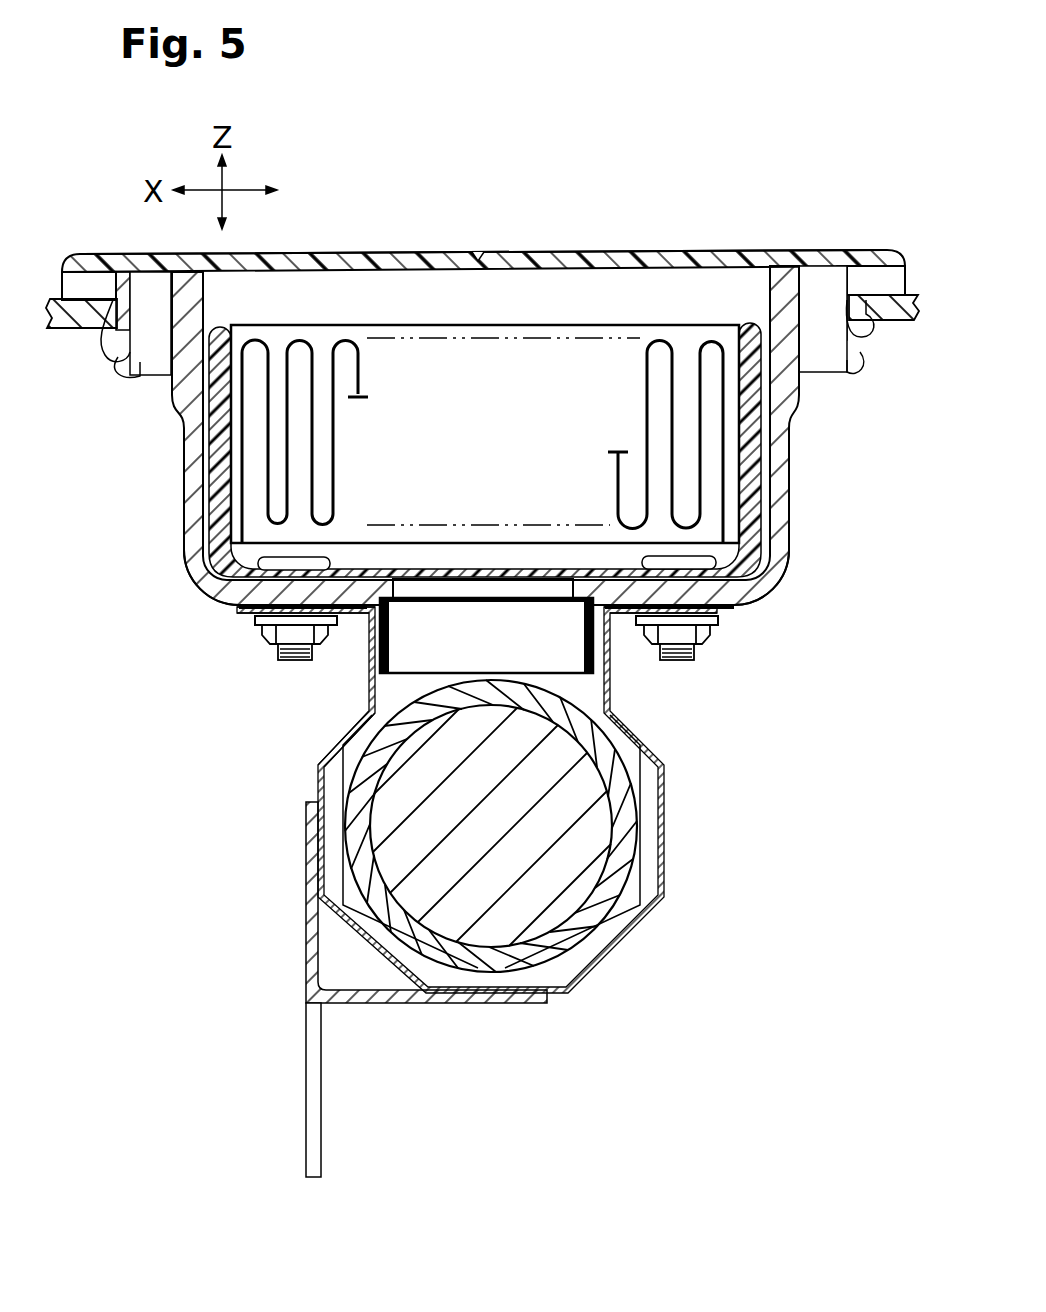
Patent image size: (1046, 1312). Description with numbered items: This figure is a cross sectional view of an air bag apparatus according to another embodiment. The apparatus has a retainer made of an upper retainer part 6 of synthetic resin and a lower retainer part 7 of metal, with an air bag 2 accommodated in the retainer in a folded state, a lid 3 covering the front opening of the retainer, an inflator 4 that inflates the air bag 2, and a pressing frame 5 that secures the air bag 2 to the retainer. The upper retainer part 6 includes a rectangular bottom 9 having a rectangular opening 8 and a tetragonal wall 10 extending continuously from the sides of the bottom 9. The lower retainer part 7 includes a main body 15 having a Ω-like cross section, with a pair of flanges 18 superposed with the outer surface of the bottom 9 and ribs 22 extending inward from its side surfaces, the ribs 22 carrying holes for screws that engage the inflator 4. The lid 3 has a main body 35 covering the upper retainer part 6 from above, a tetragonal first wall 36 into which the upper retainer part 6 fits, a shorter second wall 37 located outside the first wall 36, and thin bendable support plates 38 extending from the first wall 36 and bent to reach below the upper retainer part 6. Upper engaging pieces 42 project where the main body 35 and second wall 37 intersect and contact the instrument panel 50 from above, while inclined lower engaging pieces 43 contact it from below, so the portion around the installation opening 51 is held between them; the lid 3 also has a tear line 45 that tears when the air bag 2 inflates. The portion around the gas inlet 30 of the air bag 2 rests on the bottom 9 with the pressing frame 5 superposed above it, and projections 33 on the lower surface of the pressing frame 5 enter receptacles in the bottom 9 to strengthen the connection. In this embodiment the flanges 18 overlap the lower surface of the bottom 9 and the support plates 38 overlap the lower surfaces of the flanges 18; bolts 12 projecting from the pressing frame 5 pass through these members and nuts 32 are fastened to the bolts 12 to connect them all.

The air bag 2 is at (340, 338).
The lid 3 is at (626, 240).
The inflator 4 is at (616, 925).
The pressing frame 5 is at (364, 592).
The upper retainer part 6 is at (219, 326).
The lower retainer part 7 is at (292, 782).
The opening 8 is at (390, 633).
The bottom 9 is at (237, 610).
The wall 10 is at (203, 497).
The bolts 12 is at (286, 661).
The main body 15 is at (682, 797).
The flanges 18 is at (345, 618).
The ribs 22 is at (327, 872).
The gas inlet 30 is at (393, 607).
The nuts 32 is at (263, 638).
The projections 33 is at (298, 558).
The main body 35 is at (347, 252).
The first wall 36 is at (170, 395).
The second wall 37 is at (828, 330).
The support plates 38 is at (186, 556).
The upper engaging pieces 42 is at (83, 285).
The lower engaging pieces 43 is at (114, 364).
The tear line 45 is at (479, 261).
The instrument panel 50 is at (900, 330).
The installation opening 51 is at (106, 322).